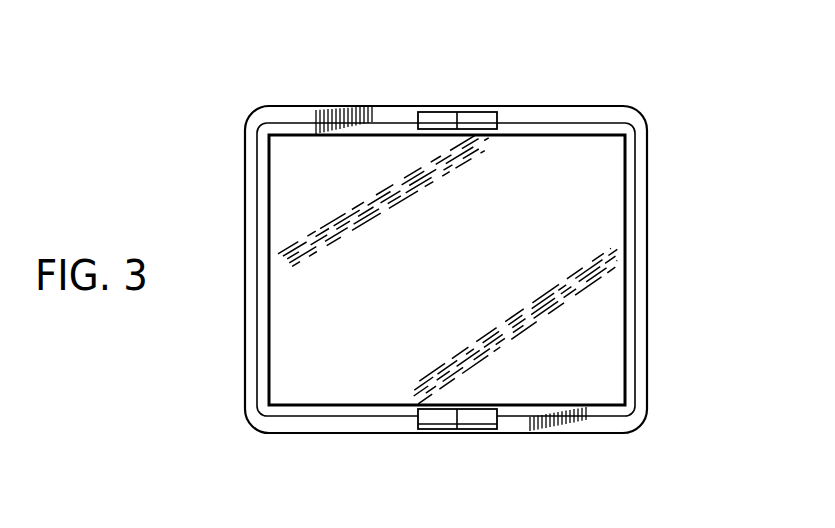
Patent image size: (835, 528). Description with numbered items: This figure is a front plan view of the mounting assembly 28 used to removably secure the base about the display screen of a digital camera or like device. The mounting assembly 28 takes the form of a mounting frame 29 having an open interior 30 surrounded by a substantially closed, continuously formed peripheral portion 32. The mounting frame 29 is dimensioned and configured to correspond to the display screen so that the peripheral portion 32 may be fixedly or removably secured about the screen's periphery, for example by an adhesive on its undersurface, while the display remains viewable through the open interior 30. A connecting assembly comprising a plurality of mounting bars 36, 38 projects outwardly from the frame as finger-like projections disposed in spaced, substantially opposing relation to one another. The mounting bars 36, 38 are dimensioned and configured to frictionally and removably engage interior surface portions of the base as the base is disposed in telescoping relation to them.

The mounting assembly 28 is at (588, 100).
The mounting frame 29 is at (653, 150).
The open interior 30 is at (459, 276).
The peripheral portion 32 is at (653, 345).
The mounting bar 36 is at (442, 100).
The mounting bar 38 is at (443, 438).